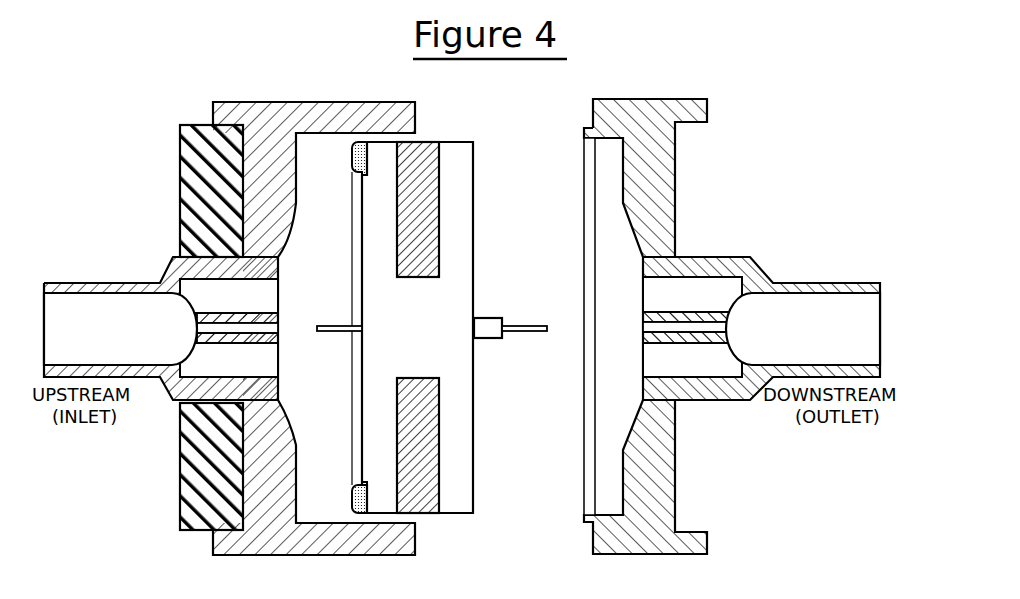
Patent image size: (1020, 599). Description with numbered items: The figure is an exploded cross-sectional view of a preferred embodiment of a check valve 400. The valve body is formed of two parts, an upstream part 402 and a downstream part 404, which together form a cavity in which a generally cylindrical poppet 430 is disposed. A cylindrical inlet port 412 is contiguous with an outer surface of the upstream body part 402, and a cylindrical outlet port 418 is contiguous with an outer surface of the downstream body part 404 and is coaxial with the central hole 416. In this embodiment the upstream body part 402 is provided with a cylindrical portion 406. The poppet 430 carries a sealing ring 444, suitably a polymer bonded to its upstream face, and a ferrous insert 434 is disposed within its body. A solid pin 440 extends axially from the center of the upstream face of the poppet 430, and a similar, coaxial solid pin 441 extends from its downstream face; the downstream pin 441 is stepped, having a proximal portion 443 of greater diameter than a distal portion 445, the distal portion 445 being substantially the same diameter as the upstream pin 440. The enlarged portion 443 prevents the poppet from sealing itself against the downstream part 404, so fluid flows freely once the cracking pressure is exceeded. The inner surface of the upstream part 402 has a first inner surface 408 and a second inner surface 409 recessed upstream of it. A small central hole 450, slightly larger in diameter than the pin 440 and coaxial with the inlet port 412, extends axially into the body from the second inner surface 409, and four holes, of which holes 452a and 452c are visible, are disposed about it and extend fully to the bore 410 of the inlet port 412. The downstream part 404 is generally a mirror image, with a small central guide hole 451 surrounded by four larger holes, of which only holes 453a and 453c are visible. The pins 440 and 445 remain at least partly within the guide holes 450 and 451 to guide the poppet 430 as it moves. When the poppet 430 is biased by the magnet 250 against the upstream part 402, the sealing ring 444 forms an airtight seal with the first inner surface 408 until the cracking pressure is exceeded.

The check valve 400 is at (222, 45).
The upstream body part 402 is at (342, 100).
The downstream body part 404 is at (640, 99).
The cylindrical portion 406 is at (405, 137).
The first inner surface 408 is at (296, 490).
The second inner surface 409 is at (278, 383).
The bore 410 is at (125, 296).
The inlet port 412 is at (105, 283).
The central hole 416 is at (792, 293).
The outlet port 418 is at (798, 283).
The magnet 250 is at (180, 198).
The poppet 430 is at (412, 327).
The ferrous insert 434 is at (440, 168).
The upstream pin 440 is at (333, 326).
The downstream pin 441 is at (500, 313).
The proximal portion 443 is at (482, 338).
The sealing ring 444 is at (352, 160).
The distal portion 445 is at (510, 322).
The central hole 450 is at (279, 329).
The central guide hole 451 is at (643, 327).
The hole 452a is at (229, 296).
The hole 452c is at (229, 360).
The hole 453a is at (692, 295).
The hole 453c is at (692, 360).